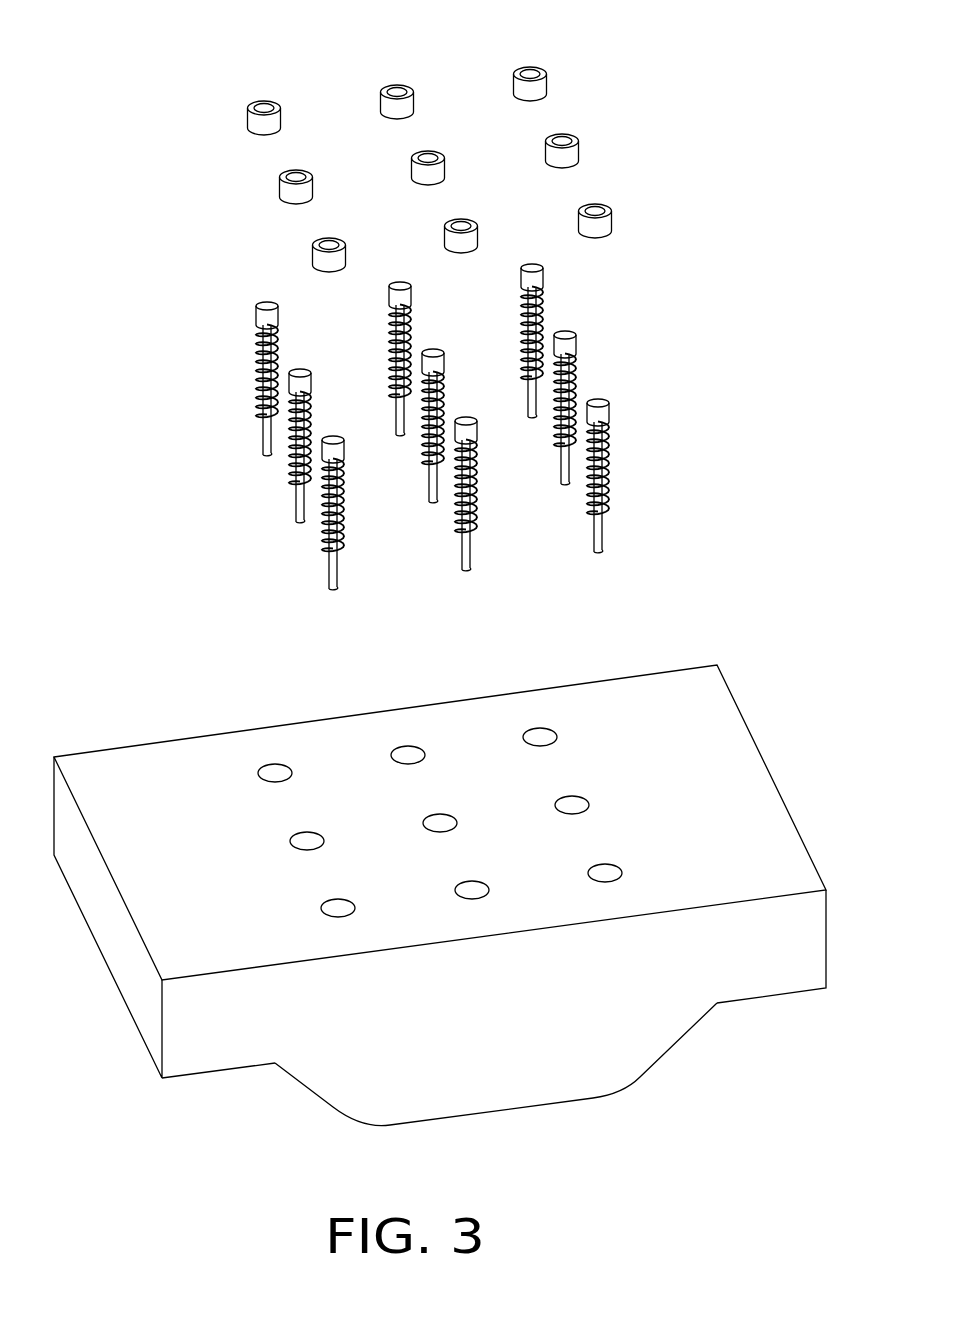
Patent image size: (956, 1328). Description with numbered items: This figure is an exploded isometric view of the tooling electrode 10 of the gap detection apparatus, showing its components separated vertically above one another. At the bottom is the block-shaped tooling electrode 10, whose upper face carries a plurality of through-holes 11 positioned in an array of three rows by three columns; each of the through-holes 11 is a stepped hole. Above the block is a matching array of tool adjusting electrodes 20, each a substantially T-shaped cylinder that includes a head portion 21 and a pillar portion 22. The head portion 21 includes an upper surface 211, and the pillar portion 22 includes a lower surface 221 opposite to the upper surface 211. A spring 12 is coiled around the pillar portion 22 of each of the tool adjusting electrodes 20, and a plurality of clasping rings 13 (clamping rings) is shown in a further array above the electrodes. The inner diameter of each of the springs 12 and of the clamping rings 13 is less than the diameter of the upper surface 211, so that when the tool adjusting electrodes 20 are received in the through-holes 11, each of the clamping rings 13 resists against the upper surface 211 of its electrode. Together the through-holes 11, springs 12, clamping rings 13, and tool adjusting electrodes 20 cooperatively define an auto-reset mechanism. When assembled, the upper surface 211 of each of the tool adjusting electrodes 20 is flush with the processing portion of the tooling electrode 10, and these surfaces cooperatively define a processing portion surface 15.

The tooling electrode 10 is at (440, 867).
The through-holes 11 is at (542, 733).
The springs 12 is at (230, 371).
The clasping rings 13 is at (570, 153).
The processing portion surface 15 is at (675, 1054).
The tool adjusting electrodes 20 is at (222, 360).
The head portion 21 is at (623, 323).
The upper surface 211 is at (227, 296).
The pillar portion 22 is at (618, 398).
The lower surface 221 is at (291, 524).